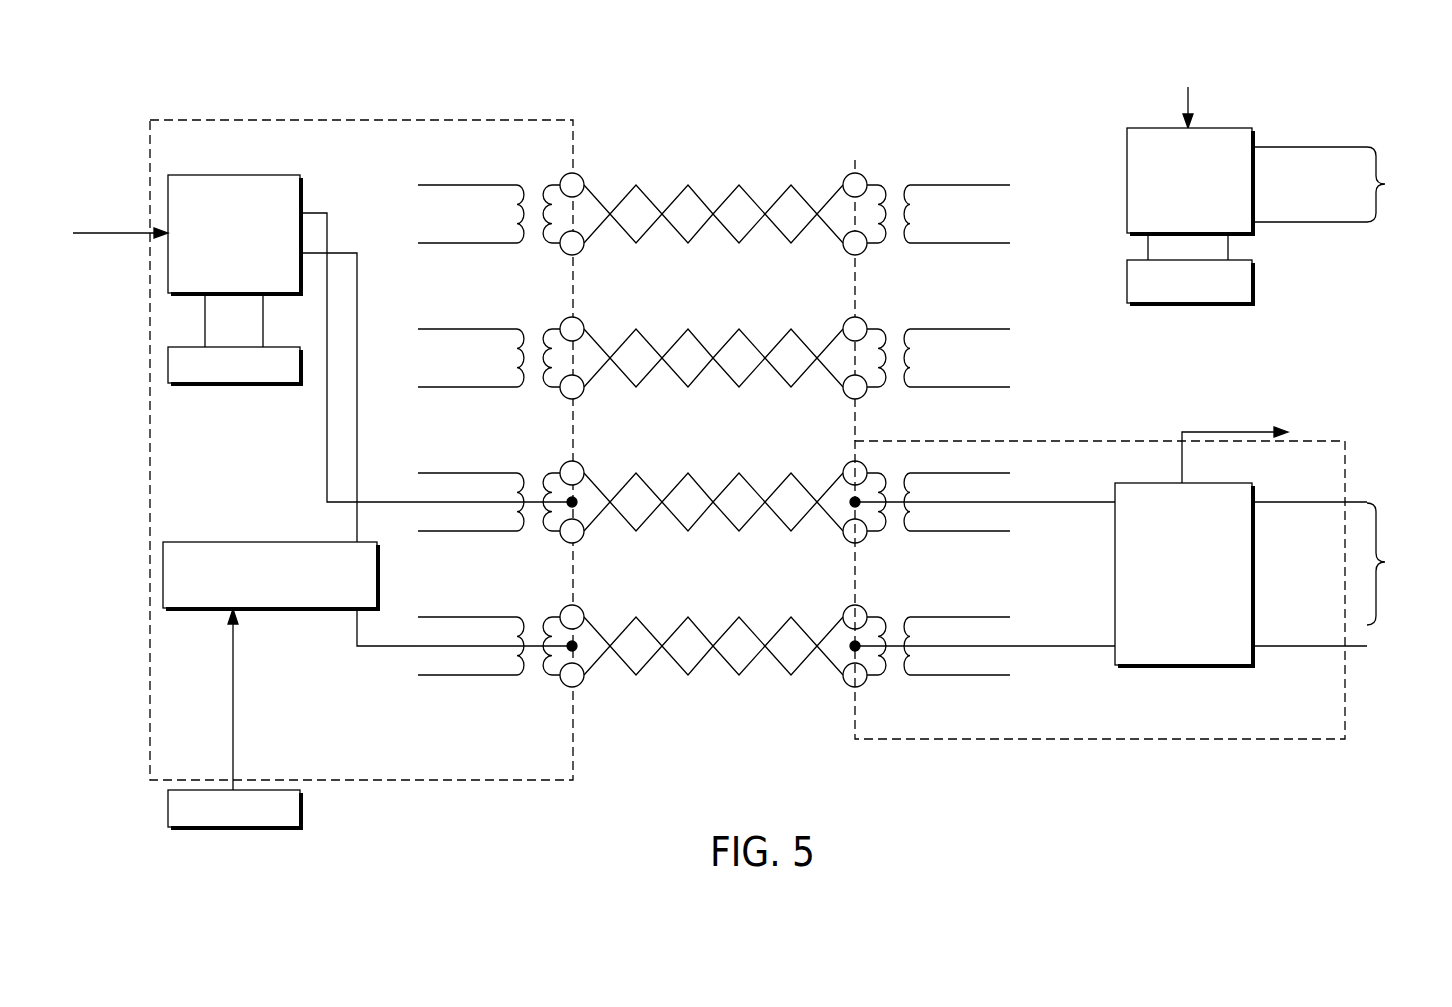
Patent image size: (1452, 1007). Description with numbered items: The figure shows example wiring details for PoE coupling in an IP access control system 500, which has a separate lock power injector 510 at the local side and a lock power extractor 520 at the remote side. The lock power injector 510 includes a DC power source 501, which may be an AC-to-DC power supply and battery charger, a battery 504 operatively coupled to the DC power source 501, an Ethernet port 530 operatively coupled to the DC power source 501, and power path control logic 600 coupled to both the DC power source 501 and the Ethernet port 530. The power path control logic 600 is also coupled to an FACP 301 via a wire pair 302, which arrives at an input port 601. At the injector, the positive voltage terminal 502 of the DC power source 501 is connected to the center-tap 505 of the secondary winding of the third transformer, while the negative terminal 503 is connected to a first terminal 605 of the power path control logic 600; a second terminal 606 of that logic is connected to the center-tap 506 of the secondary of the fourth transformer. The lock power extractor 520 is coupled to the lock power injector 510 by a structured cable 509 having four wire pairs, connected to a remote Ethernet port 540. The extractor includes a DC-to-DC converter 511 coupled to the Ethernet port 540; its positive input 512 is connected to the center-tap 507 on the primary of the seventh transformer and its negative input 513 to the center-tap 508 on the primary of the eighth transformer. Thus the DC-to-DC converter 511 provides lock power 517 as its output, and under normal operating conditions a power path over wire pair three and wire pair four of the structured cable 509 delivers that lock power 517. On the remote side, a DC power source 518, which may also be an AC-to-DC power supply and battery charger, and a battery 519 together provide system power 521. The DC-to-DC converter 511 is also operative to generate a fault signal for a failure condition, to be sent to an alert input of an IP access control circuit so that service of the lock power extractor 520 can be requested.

The IP access control system 500 is at (758, 451).
The DC power source 501 is at (168, 266).
The positive voltage terminal 502 is at (324, 212).
The negative terminal 503 is at (318, 258).
The battery 504 is at (168, 362).
The center-tap 505 is at (578, 506).
The center-tap 506 is at (578, 650).
The center-tap 507 is at (848, 507).
The center-tap 508 is at (848, 651).
The structured cable 509 is at (768, 165).
The lock power injector 510 is at (150, 490).
The DC-to-DC converter 511 is at (1183, 667).
The positive input 512 is at (1072, 504).
The negative input 513 is at (1072, 648).
The lock power 517 is at (1443, 578).
The DC power source 518 is at (1127, 185).
The battery 519 is at (1252, 280).
The lock power extractor 520 is at (1070, 740).
The system power 521 is at (1443, 202).
The Ethernet port 530 is at (585, 160).
The Ethernet port 540 is at (853, 165).
The power path control logic 600 is at (163, 575).
The input port 601 is at (237, 611).
The first terminal 605 is at (357, 542).
The terminal 606 is at (355, 612).
The FACP 301 is at (237, 829).
The wire pair 302 is at (233, 742).